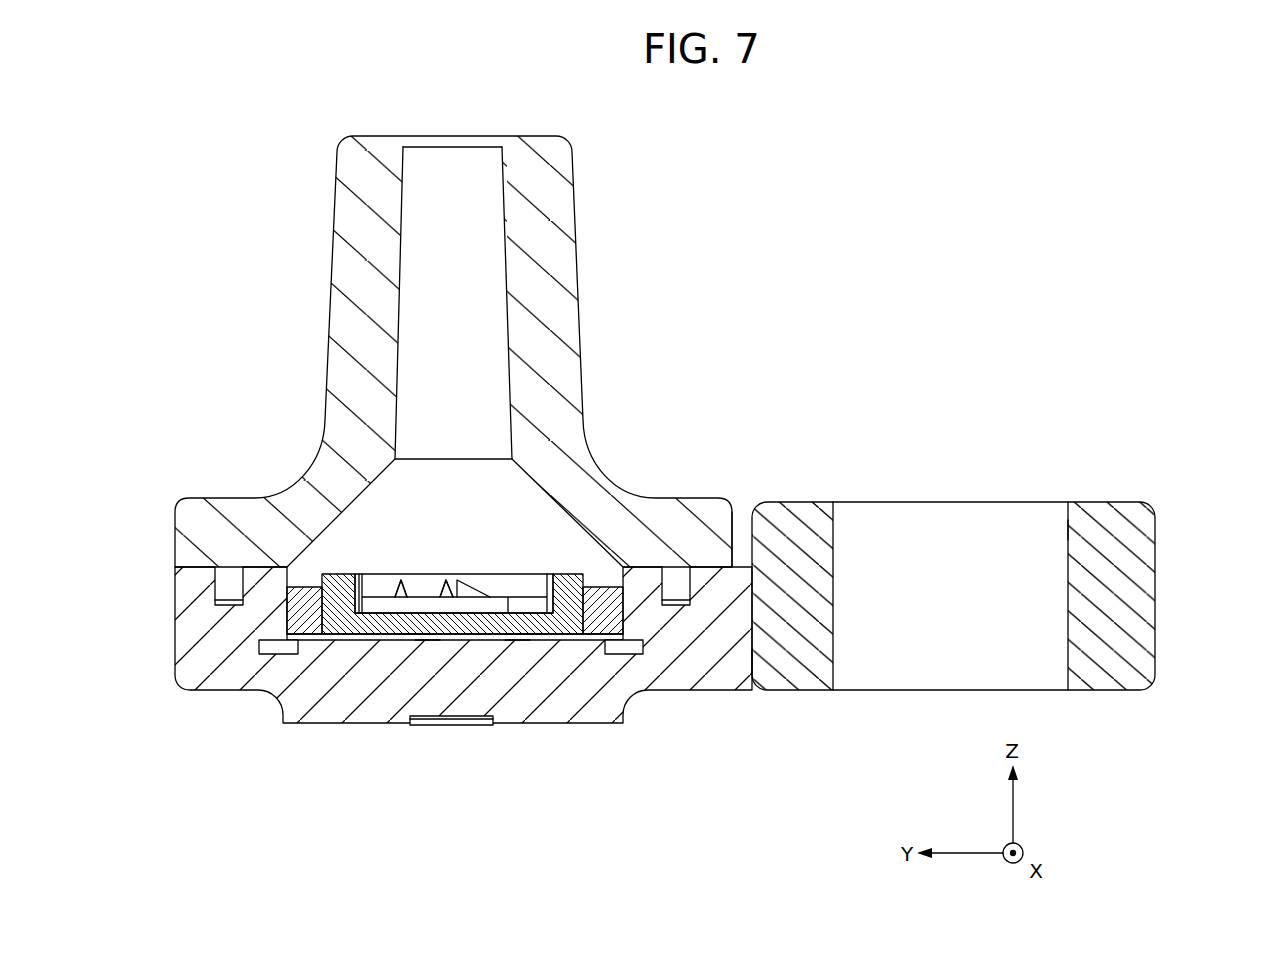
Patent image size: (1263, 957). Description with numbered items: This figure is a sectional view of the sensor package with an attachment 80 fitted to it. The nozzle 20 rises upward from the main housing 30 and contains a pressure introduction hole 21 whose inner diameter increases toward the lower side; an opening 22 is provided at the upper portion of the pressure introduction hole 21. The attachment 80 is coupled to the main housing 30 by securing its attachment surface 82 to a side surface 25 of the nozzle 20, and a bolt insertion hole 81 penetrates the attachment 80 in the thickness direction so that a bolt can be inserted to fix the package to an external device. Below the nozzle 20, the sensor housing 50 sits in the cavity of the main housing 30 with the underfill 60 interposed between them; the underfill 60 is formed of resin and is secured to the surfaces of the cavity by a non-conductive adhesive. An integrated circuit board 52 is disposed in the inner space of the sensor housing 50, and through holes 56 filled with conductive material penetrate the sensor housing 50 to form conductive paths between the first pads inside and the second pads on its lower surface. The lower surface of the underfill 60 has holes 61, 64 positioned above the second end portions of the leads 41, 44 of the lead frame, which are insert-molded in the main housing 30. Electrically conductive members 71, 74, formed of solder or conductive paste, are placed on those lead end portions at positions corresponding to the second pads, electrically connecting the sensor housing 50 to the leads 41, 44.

The nozzle 20 is at (292, 233).
The pressure introduction hole 21 is at (404, 330).
The opening 22 is at (424, 143).
The side surface 25 is at (753, 577).
The main housing 30 is at (331, 712).
The lead 41 is at (627, 645).
The lead 44 is at (270, 647).
The sensor housing 50 is at (560, 620).
The integrated circuit (IC) board 52 is at (458, 605).
The through hole 56 is at (407, 632).
The underfill 60 is at (592, 620).
The hole 61 is at (523, 633).
The hole 64 is at (425, 640).
The electrically conductive member 71 is at (517, 640).
The electrically conductive member 74 is at (415, 640).
The attachment 80 is at (1157, 592).
The bolt insertion hole 81 is at (1065, 528).
The attachment surface 82 is at (752, 662).